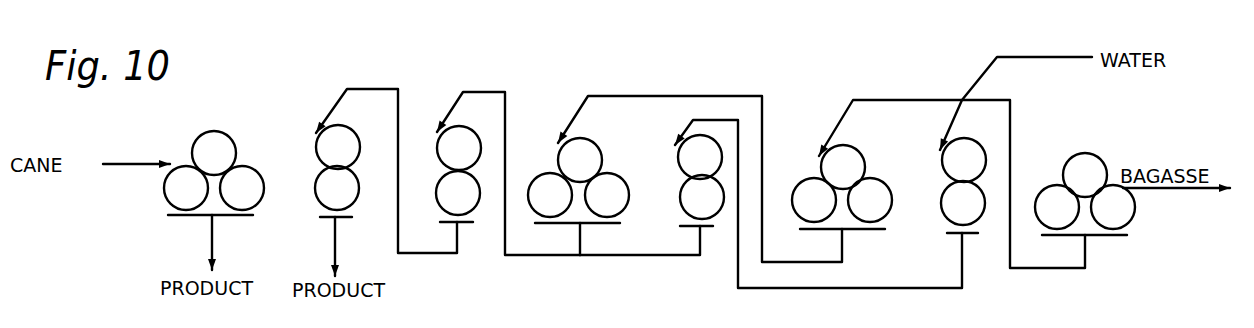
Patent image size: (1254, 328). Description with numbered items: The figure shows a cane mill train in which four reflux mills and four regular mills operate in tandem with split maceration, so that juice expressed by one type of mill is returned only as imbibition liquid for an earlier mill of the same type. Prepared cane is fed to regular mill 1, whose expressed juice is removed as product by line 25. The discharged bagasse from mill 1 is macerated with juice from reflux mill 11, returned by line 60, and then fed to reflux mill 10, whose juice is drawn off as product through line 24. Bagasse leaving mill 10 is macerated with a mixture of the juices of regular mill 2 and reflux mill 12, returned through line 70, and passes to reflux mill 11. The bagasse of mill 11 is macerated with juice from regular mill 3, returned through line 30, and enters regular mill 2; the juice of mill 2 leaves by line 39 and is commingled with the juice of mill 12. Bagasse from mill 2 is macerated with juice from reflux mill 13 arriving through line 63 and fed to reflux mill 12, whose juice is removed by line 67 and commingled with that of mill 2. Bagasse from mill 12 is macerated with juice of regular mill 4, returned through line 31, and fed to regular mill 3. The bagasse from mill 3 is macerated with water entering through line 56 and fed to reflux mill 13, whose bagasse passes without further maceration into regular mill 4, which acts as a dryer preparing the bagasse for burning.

The regular mill 1 is at (207, 165).
The regular mill 2 is at (573, 172).
The regular mill 3 is at (836, 179).
The regular mill 4 is at (1078, 187).
The reflux mill 10 is at (326, 159).
The reflux mill 11 is at (448, 160).
The reflux mill 12 is at (688, 169).
The reflux mill 13 is at (952, 172).
The product line 24 is at (337, 240).
The product line 25 is at (214, 237).
The juice return line 30 is at (845, 247).
The juice return line 31 is at (1088, 259).
The juice line 39 is at (583, 238).
The water line 56 is at (1055, 57).
The reflux juice return line 60 is at (449, 254).
The reflux juice return line 63 is at (963, 264).
The juice line 67 is at (702, 254).
The commingled juice return line 70 is at (560, 256).